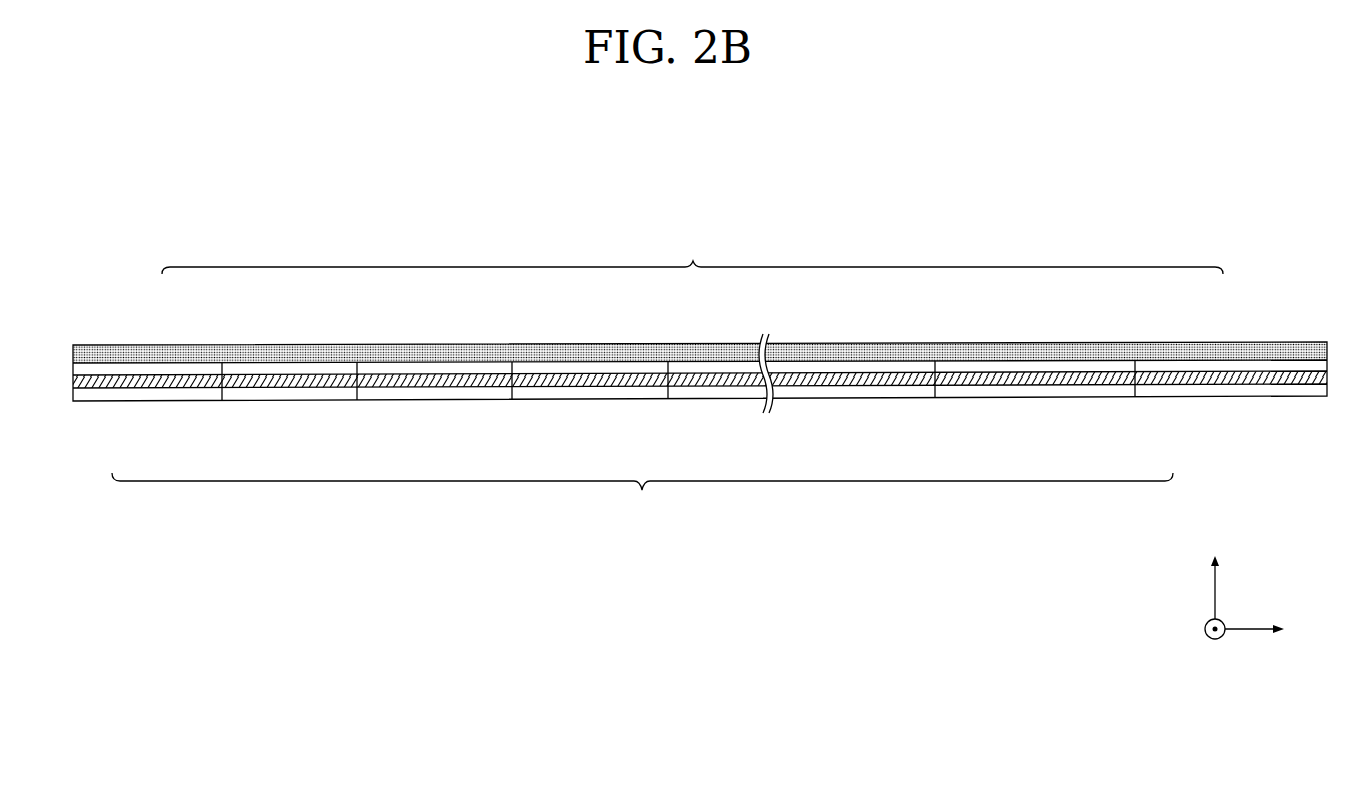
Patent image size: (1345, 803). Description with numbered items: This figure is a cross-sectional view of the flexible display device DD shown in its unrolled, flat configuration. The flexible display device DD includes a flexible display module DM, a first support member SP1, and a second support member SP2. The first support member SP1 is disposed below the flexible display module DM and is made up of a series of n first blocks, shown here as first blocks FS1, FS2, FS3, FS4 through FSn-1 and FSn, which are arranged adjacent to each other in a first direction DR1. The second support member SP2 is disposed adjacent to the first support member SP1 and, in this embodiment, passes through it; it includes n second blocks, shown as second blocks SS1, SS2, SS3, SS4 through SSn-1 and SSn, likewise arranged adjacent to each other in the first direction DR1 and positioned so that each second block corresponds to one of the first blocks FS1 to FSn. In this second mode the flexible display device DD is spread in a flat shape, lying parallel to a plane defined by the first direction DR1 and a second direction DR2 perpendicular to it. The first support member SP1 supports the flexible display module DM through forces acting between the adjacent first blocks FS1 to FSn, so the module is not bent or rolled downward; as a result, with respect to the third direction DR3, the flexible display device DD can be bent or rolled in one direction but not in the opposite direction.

The flexible display device DD is at (1183, 153).
The flexible display module DM is at (1310, 352).
The first support member SP1 is at (692, 253).
The second support member SP2 is at (642, 496).
The first block FS1 is at (176, 362).
The first block FS2 is at (324, 362).
The first block FS3 is at (461, 362).
The first block FS4 is at (607, 362).
The first block FSn-1 is at (1056, 360).
The first block FSn is at (1205, 360).
The second block SS1 is at (121, 388).
The second block SS2 is at (269, 388).
The second block SS3 is at (402, 388).
The second block SS4 is at (548, 388).
The second block SSn-1 is at (1000, 384).
The second block SSn is at (1148, 385).
The first direction DR1 is at (1273, 628).
The second direction DR2 is at (1218, 643).
The third direction DR3 is at (1218, 576).